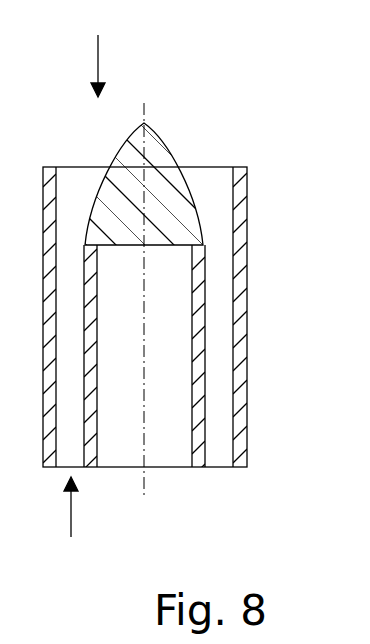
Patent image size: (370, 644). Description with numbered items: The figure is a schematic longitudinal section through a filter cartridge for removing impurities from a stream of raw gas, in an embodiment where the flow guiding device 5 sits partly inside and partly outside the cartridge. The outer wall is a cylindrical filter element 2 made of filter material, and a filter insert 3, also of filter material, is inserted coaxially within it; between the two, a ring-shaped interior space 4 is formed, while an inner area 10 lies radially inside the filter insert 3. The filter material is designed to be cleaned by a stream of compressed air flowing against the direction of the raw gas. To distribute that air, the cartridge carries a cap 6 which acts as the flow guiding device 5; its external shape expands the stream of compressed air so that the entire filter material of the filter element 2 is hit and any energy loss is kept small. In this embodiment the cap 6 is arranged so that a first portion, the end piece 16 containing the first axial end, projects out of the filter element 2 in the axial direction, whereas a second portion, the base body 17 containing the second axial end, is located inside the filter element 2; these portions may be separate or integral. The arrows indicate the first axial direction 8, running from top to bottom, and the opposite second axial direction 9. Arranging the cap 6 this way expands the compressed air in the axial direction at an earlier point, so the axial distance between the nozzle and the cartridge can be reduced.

The filter element 2 is at (243, 277).
The filter insert 3 is at (198, 332).
The interior space 4 is at (220, 208).
The flow guiding device 5 is at (168, 150).
The cap 6 is at (173, 180).
The first axial direction 8 is at (97, 54).
The second axial direction 9 is at (70, 522).
The inner area 10 is at (170, 440).
The first portion / end piece 16 is at (133, 141).
The second portion / base body 17 is at (183, 218).